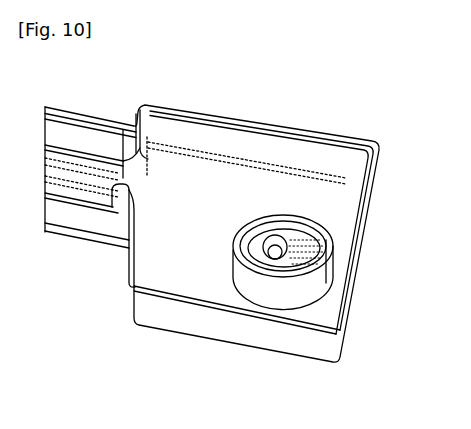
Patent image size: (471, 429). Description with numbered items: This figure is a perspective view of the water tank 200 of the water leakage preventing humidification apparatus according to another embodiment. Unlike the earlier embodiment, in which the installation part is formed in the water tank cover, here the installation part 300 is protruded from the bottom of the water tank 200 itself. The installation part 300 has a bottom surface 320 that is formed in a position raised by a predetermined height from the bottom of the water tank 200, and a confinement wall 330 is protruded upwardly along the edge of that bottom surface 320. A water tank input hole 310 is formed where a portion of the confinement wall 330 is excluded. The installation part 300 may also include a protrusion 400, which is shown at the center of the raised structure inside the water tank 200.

The water tank 200 is at (358, 142).
The installation part 300 is at (279, 247).
The water tank input hole 310 is at (322, 257).
The bottom surface 320 is at (298, 280).
The confinement wall 330 is at (271, 279).
The protrusion 400 is at (276, 235).